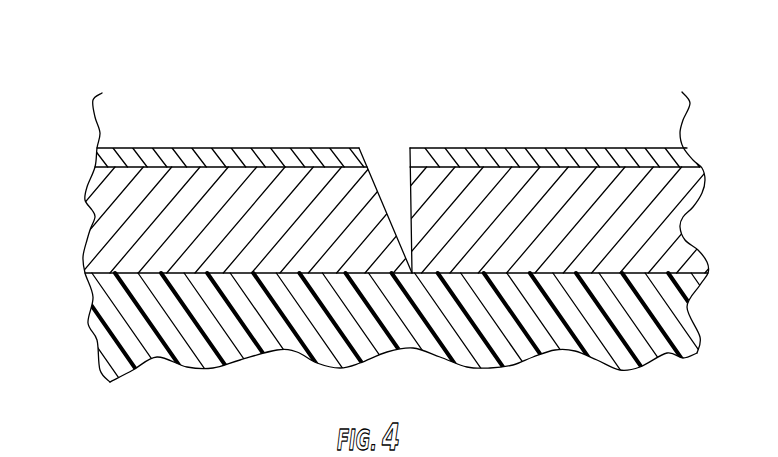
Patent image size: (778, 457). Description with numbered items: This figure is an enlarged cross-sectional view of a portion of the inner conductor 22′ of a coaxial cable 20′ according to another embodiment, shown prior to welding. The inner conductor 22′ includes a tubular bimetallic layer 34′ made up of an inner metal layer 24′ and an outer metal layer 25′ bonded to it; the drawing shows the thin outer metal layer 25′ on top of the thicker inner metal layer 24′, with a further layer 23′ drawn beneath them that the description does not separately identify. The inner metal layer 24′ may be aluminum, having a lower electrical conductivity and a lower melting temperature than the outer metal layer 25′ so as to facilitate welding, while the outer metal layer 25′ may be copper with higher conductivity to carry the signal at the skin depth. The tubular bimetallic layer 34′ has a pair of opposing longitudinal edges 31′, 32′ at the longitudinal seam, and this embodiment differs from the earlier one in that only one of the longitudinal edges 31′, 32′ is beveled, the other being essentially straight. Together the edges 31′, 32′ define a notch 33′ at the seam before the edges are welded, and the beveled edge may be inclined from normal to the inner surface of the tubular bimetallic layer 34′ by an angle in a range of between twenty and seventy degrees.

The coaxial cable 20′ is at (562, 82).
The inner conductor 22′ is at (408, 100).
The base layer 23′ is at (697, 338).
The inner metal layer 24′ is at (678, 253).
The outer metal layer 25′ is at (623, 130).
The longitudinal edge 31′ is at (429, 151).
The longitudinal edge 32′ is at (407, 200).
The V-shaped notch 33′ is at (400, 217).
The tubular bimetallic layer 34′ is at (93, 218).